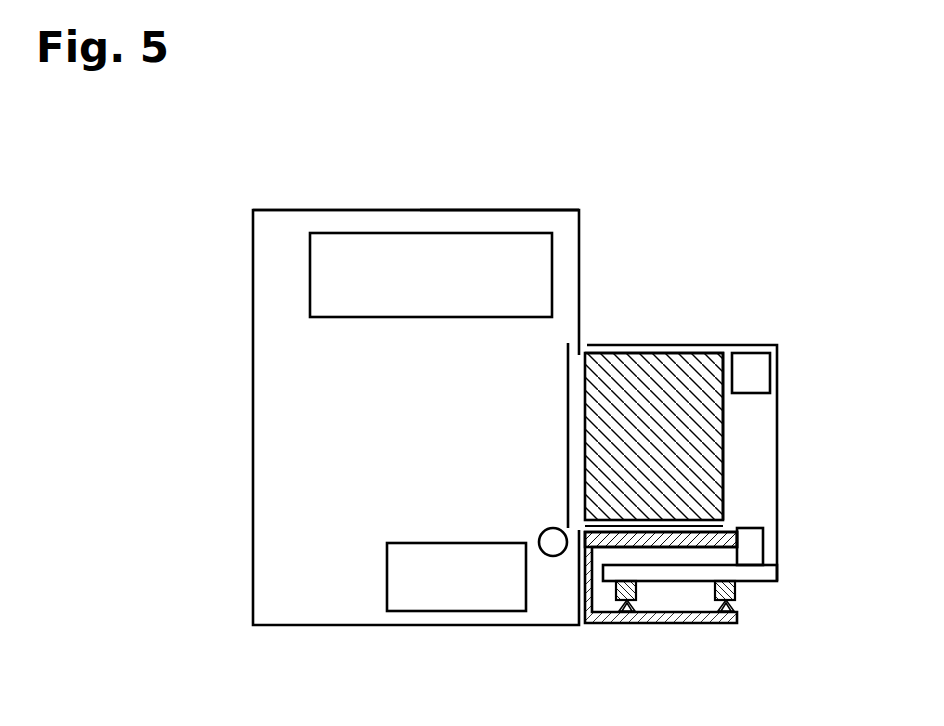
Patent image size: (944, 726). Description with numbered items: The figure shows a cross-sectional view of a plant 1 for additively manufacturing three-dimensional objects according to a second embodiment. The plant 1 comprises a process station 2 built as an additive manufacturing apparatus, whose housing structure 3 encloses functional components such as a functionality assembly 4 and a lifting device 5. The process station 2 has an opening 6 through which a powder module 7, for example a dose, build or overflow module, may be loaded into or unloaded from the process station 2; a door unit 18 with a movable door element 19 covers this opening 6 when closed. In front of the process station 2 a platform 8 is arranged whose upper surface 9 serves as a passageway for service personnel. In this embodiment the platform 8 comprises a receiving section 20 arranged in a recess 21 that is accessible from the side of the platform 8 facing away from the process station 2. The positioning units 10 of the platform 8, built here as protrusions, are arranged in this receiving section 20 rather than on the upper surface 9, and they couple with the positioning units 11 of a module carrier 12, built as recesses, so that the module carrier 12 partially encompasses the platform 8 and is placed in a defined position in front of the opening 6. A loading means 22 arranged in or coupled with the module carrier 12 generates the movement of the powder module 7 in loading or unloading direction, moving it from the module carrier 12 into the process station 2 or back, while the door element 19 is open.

The plant 1 is at (176, 143).
The process station 2 is at (326, 195).
The housing structure 3 is at (508, 209).
The functionality assembly 4 is at (430, 232).
The lifting device 5 is at (458, 612).
The opening 6 is at (575, 393).
The powder module 7 is at (708, 354).
The platform 8 is at (737, 540).
The upper surface 9 is at (730, 532).
The positioning unit 10 is at (627, 601).
The positioning unit 11 is at (637, 594).
The module carrier 12 is at (778, 362).
The door unit 18 is at (551, 580).
The door element 19 is at (568, 437).
The receiving section 20 is at (607, 615).
The recess 21 is at (700, 560).
The loading means 22 is at (747, 353).